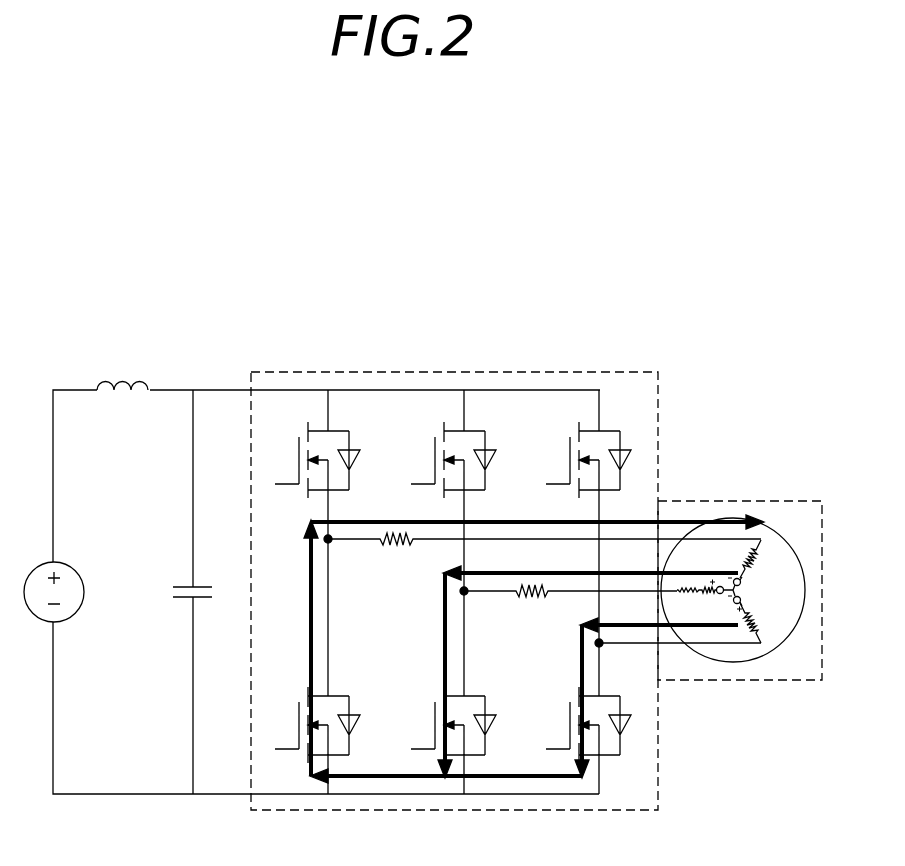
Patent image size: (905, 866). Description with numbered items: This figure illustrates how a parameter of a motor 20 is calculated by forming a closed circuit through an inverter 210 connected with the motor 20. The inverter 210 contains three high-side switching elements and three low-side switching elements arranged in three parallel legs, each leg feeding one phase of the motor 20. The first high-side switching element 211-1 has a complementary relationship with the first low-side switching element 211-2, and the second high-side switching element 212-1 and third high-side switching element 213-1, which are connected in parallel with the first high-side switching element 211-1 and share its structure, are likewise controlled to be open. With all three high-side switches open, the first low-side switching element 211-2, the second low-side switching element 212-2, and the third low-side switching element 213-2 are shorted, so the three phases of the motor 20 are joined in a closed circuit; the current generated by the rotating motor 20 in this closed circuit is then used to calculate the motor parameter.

The inverter 210 is at (572, 372).
The first high-side switching element 211-1 is at (340, 431).
The second high-side switching element 212-1 is at (476, 431).
The third high-side switching element 213-1 is at (611, 431).
The first low-side switching element 211-2 is at (351, 754).
The second low-side switching element 212-2 is at (487, 754).
The third low-side switching element 213-2 is at (623, 754).
The motor 20 is at (738, 501).